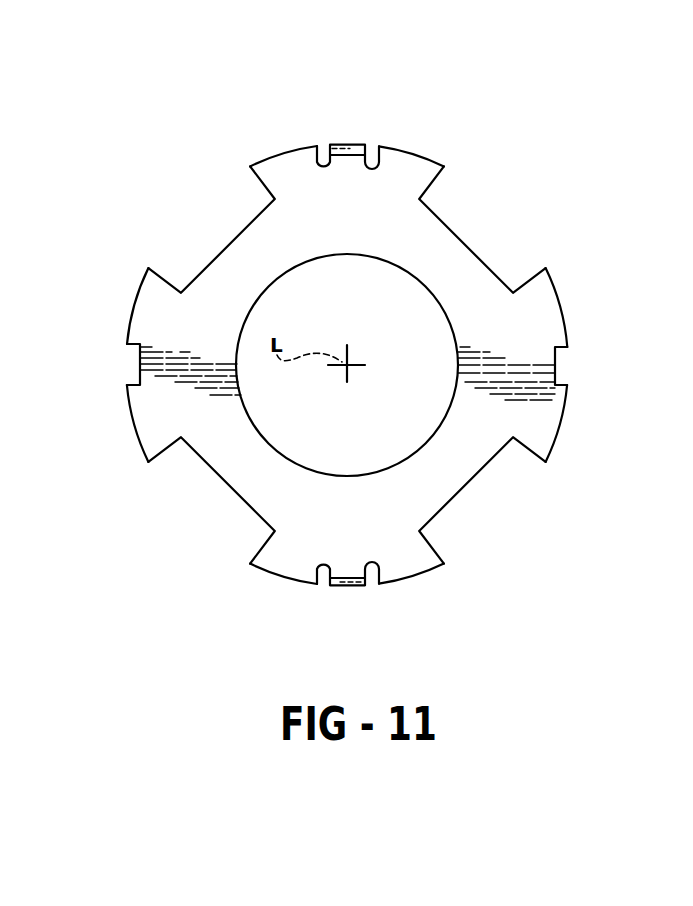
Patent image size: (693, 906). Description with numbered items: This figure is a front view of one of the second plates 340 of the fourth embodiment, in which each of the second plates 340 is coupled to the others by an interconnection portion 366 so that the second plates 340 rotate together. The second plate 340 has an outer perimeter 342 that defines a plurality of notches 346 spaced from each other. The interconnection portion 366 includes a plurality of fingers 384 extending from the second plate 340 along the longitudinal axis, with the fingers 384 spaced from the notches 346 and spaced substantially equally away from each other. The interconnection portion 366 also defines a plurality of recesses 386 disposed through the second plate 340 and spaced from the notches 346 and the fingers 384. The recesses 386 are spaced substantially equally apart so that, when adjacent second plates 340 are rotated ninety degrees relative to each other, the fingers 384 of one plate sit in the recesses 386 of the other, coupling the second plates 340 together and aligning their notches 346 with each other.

The second plates 340 is at (242, 285).
The outer perimeter 342 is at (360, 354).
The notches 346 is at (199, 210).
The interconnection portion 366 is at (397, 112).
The fingers 384 is at (353, 146).
The recesses 386 is at (140, 368).